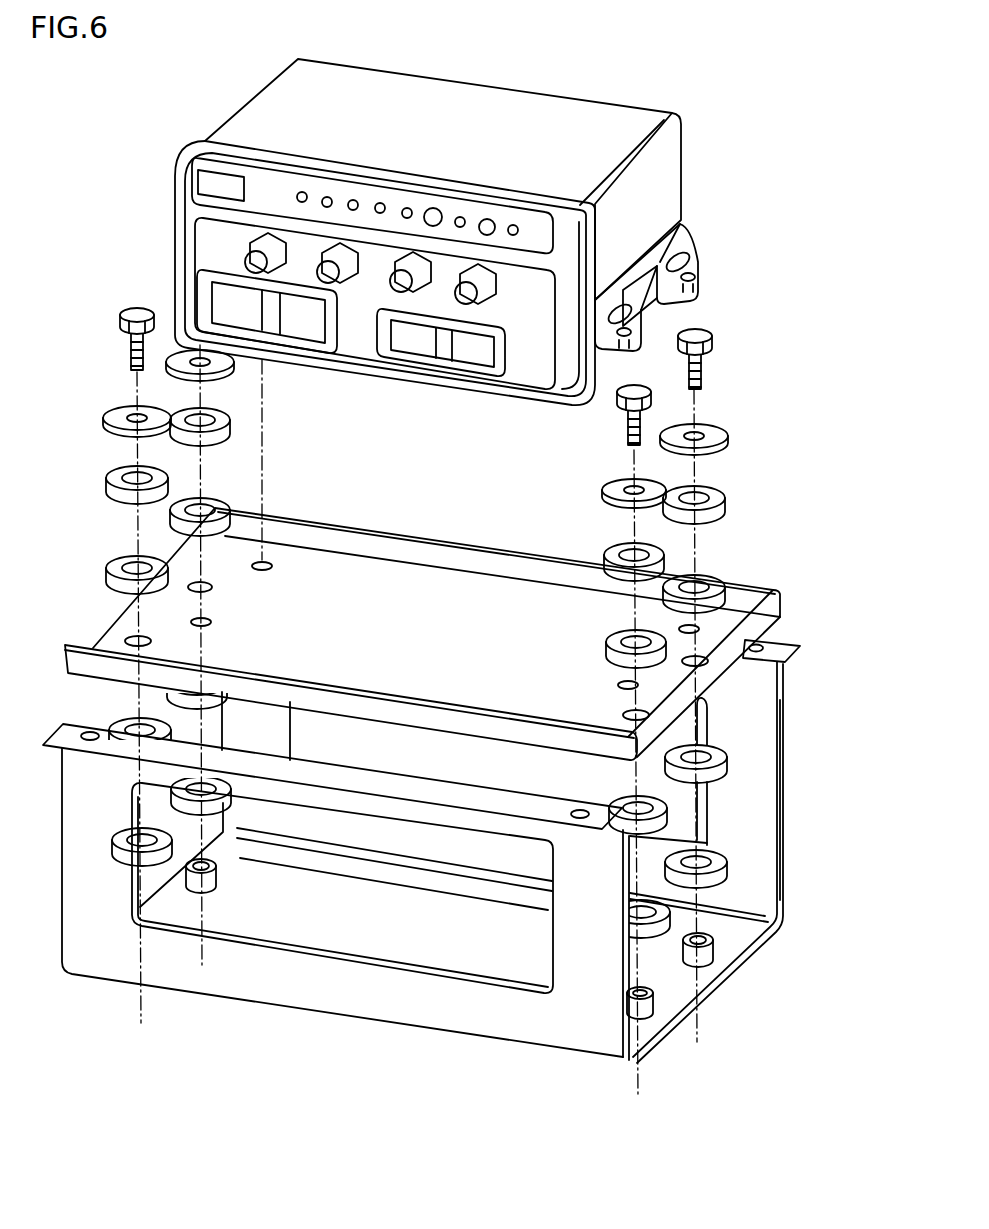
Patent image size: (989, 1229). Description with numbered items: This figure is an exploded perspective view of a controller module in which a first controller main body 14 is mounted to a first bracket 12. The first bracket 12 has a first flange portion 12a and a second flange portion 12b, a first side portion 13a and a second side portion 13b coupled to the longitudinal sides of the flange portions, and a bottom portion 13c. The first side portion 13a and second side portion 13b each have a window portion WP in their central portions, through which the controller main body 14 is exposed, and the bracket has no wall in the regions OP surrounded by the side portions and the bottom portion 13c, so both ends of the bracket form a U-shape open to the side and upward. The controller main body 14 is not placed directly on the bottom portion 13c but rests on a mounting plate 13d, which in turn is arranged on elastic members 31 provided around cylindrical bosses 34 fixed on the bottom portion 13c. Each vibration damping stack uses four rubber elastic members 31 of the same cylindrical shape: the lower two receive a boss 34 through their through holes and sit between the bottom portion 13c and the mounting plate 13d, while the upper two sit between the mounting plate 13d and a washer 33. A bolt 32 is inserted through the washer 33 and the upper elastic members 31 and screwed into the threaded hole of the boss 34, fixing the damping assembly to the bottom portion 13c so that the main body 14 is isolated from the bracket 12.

The first controller main body 14 is at (652, 199).
The bolt 32 is at (698, 333).
The washer 33 is at (703, 432).
The elastic member 31 is at (707, 495).
The mounting plate 13d is at (737, 632).
The first flange portion 12a is at (777, 640).
The first side portion 13a is at (748, 712).
The region without wall OP is at (785, 799).
The bottom portion 13c is at (733, 927).
The boss 34 is at (708, 952).
The first bracket 12 is at (705, 975).
The second side portion 13b is at (381, 996).
The window portion WP is at (291, 962).
The second flange portion 12b is at (498, 800).